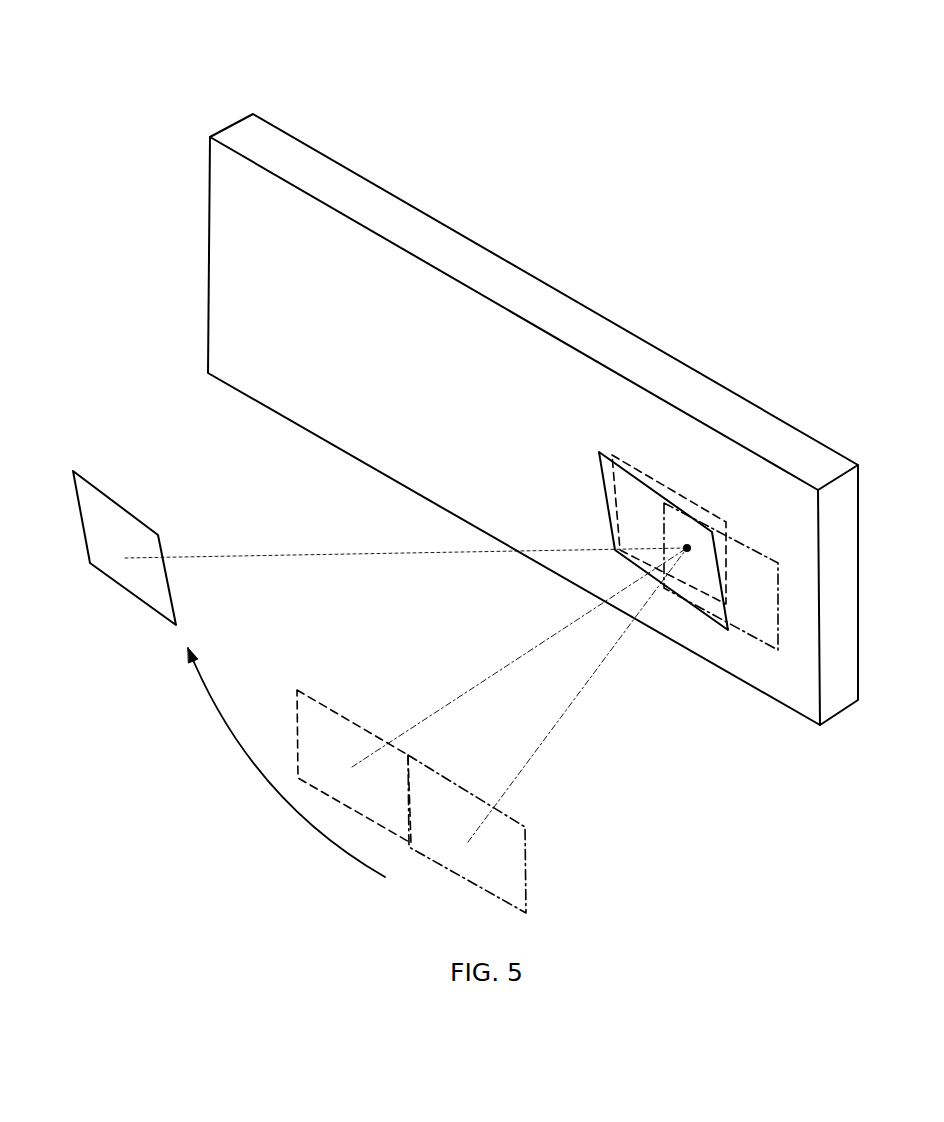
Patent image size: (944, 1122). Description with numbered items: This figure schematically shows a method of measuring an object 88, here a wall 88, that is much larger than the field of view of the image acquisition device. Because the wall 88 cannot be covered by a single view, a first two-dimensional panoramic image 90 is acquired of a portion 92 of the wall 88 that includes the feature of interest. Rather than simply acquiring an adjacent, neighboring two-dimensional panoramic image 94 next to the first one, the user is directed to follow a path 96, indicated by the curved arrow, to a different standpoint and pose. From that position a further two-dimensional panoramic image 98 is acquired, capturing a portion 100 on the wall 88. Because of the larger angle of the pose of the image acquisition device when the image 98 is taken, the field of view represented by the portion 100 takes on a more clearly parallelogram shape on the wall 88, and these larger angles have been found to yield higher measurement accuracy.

The object 88 is at (349, 168).
The first 2D panoramic image 90 is at (497, 893).
The portion of the wall 92 is at (778, 584).
The adjacent 2D panoramic image 94 is at (357, 722).
The path 96 is at (238, 750).
The 2D panoramic image 98 is at (83, 528).
The portion on the wall 100 is at (604, 498).